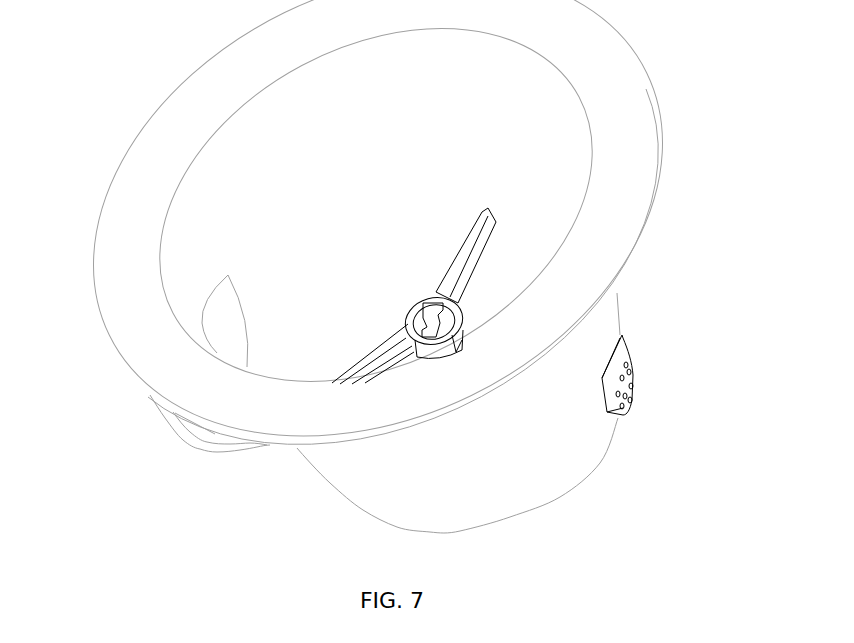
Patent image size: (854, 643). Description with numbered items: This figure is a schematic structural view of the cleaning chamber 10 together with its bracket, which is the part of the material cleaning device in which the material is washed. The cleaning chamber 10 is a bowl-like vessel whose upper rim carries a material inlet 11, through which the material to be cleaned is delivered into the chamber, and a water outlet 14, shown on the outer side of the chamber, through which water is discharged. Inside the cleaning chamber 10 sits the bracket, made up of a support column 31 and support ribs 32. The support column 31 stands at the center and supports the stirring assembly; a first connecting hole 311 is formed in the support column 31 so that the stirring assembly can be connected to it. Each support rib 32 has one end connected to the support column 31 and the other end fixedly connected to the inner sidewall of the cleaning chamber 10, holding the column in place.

The cleaning chamber 10 is at (549, 449).
The material inlet 11 is at (201, 434).
The water outlet 14 is at (636, 381).
The support column 31 is at (463, 326).
The first connecting hole 311 is at (416, 311).
The support rib 32 is at (372, 368).